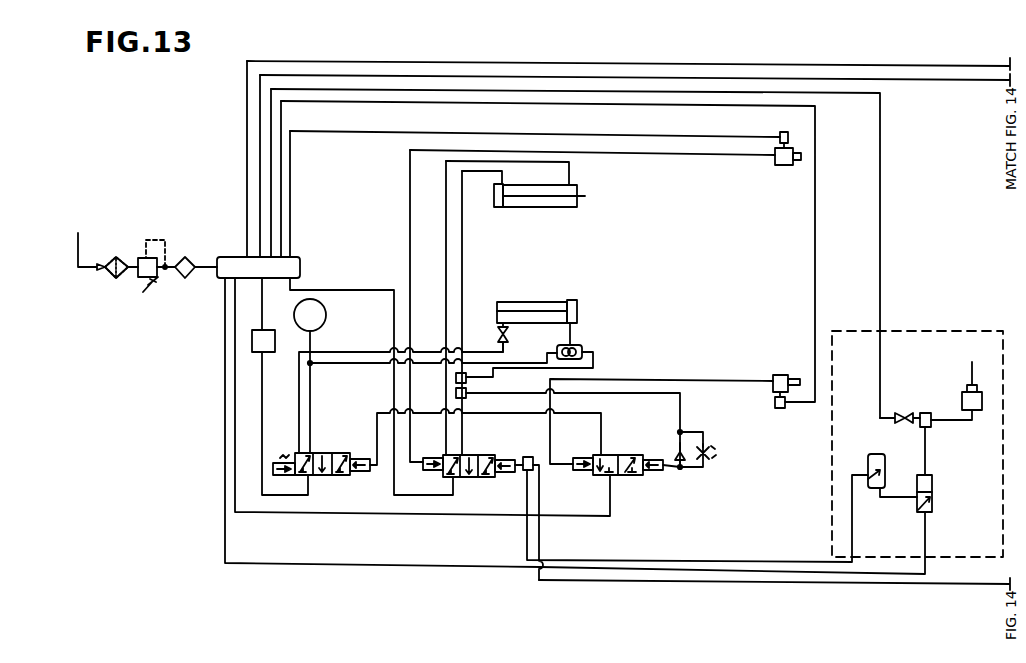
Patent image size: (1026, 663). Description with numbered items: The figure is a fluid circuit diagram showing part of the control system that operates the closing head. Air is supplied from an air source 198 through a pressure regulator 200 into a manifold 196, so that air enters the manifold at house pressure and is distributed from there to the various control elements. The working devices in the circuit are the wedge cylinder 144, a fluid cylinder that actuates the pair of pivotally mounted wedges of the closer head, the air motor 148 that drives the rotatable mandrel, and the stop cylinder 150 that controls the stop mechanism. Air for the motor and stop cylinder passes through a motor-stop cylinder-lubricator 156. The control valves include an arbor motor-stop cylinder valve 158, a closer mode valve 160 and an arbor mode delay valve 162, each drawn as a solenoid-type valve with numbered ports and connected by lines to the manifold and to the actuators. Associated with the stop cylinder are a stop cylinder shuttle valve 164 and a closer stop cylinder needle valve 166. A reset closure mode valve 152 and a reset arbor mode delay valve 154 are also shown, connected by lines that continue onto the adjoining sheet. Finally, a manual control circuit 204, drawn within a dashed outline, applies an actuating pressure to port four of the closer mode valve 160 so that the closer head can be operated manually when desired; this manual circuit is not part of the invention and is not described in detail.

The wedge cylinder 144 is at (577, 190).
The air motor 148 is at (326, 315).
The stop cylinder 150 is at (577, 305).
The reset closure mode valve 152 is at (778, 165).
The reset arbor mode delay valve 154 is at (786, 375).
The motor-stop cylinder-lubricator 156 is at (276, 352).
The arbor motor-stop cylinder valve 158 is at (334, 482).
The closer mode valve 160 is at (487, 483).
The arbor mode delay valve 162 is at (634, 478).
The stop cylinder shuttle valve 164 is at (582, 345).
The closer stop cylinder needle valve 166 is at (498, 334).
The manifold 196 is at (222, 257).
The air source 198 is at (80, 247).
The pressure regulator 200 is at (170, 280).
The manual control circuit 204 is at (958, 340).